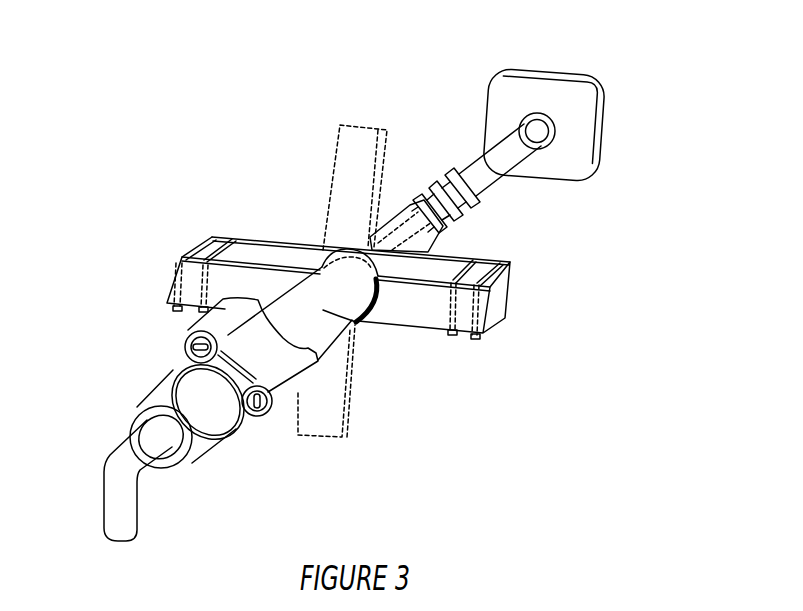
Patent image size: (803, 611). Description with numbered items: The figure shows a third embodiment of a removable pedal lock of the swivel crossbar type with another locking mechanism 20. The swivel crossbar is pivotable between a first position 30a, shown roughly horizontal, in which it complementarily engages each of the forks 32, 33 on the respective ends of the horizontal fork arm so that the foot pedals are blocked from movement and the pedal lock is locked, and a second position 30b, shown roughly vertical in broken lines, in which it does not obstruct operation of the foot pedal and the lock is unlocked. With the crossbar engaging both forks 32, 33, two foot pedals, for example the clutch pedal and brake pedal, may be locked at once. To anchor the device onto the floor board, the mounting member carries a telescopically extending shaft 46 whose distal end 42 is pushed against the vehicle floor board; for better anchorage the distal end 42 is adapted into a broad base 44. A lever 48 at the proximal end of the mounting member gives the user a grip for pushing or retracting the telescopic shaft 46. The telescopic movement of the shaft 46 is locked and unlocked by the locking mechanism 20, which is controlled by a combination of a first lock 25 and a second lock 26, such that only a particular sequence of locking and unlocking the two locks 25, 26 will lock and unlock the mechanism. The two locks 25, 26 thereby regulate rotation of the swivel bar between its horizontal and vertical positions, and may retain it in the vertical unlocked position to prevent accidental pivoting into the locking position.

The locking mechanism 20 is at (352, 322).
The first lock 25 is at (188, 347).
The second lock 26 is at (257, 414).
The first position 30a is at (178, 282).
The second position 30b is at (337, 168).
The fork 32 is at (510, 290).
The fork 33 is at (207, 243).
The distal end 42 is at (525, 141).
The broad base 44 is at (598, 133).
The telescopically extending shaft 46 is at (487, 172).
The lever 48 is at (125, 505).